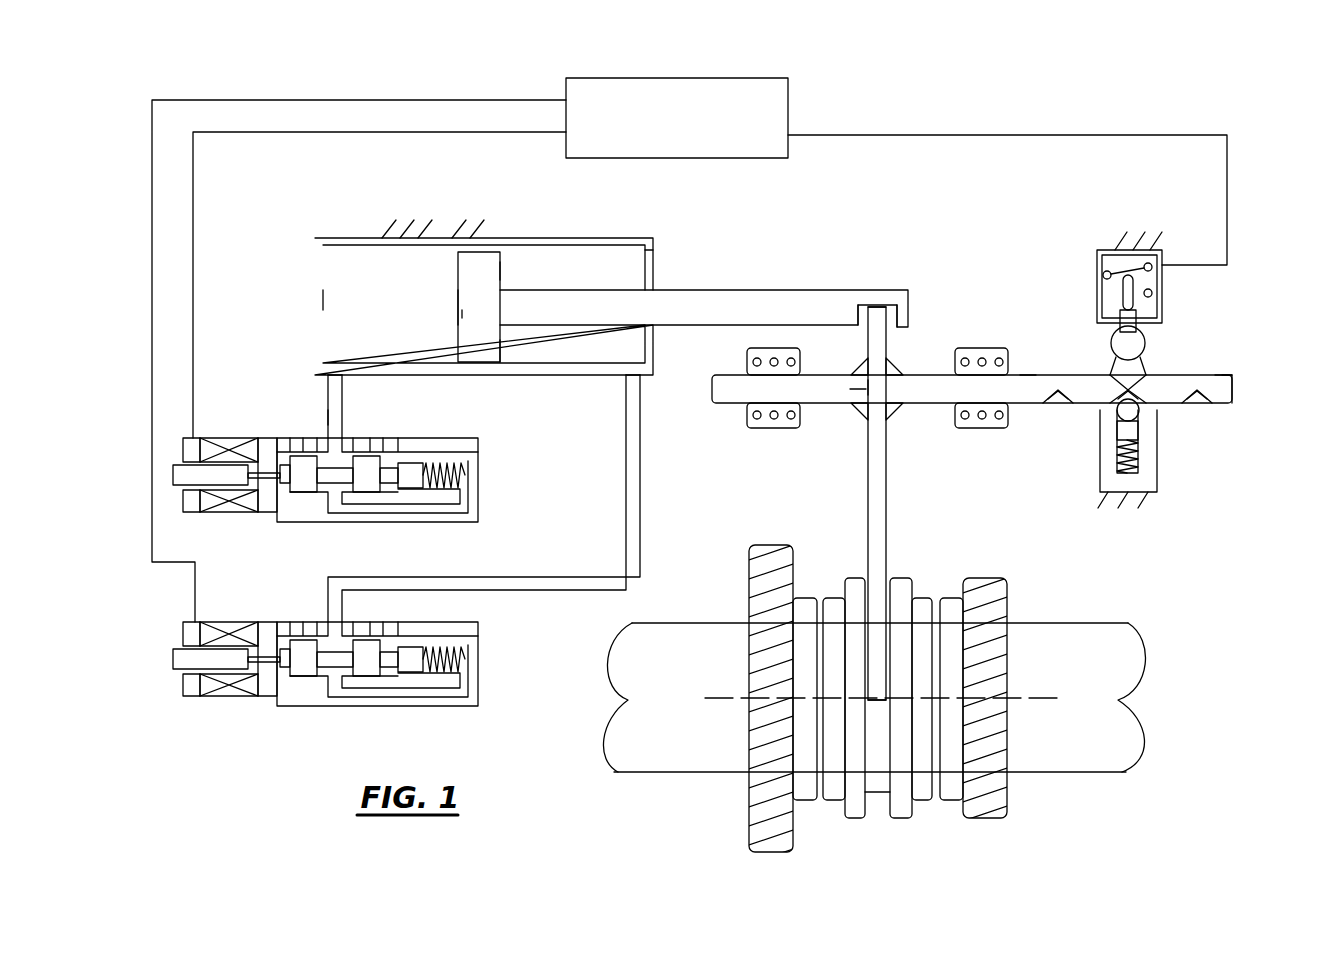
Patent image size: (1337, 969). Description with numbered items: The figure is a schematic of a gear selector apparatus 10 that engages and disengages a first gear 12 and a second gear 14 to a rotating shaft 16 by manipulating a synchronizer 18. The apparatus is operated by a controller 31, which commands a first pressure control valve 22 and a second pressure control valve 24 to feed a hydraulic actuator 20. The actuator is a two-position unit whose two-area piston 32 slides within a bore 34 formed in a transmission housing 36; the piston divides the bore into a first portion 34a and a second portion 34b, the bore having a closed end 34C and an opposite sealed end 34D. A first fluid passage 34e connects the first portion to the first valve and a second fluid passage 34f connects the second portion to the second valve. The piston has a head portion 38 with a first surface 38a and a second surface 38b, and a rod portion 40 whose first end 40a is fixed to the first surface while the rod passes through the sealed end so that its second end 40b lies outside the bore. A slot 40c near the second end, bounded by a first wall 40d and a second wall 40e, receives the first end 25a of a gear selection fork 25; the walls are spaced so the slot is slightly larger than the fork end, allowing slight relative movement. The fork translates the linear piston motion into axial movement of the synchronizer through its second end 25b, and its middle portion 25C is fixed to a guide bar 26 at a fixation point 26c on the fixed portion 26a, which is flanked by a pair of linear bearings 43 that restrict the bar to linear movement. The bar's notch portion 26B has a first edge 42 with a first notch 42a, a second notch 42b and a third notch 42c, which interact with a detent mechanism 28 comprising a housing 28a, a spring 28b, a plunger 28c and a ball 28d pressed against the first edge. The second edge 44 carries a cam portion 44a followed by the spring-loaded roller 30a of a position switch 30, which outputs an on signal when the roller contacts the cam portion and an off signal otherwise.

The gear selector apparatus 10 is at (860, 88).
The first gear 12 is at (1007, 797).
The second gear 14 is at (749, 822).
The rotating shaft 16 is at (1098, 772).
The synchronizer 18 is at (900, 818).
The hydraulic actuator 20 is at (530, 226).
The first pressure control valve 22 is at (263, 520).
The second pressure control valve 24 is at (263, 706).
The gear selection fork 25 is at (888, 535).
The first end 25a is at (878, 306).
The second end 25b is at (878, 702).
The middle portion 25C is at (868, 388).
The guide bar 26 is at (918, 405).
The fixed portion 26a is at (1028, 375).
The notch portion 26B is at (1242, 350).
The fixation point 26c is at (849, 431).
The detent mechanism 28 is at (1167, 512).
The housing 28a is at (1100, 485).
The spring 28b is at (1117, 468).
The plunger 28c is at (1138, 430).
The ball 28d is at (1115, 405).
The position switch 30 is at (1103, 250).
The spring-loaded roller 30a is at (1146, 338).
The controller 31 is at (660, 124).
The two-area piston 32 is at (505, 350).
The bore 34 is at (362, 250).
The first portion 34a is at (367, 362).
The second portion 34b is at (610, 362).
The closed end 34C is at (323, 300).
The sealed end 34D is at (645, 250).
The first fluid passage 34e is at (328, 418).
The second fluid passage 34f is at (626, 472).
The transmission housing 36 is at (442, 216).
The head portion 38 is at (483, 255).
The first surface 38a is at (458, 303).
The second surface 38b is at (500, 278).
The rod portion 40 is at (706, 290).
The first end 40a is at (480, 312).
The second end 40b is at (908, 322).
The slot 40c is at (864, 312).
The first wall 40d is at (866, 328).
The second wall 40e is at (888, 322).
The first edge 42 is at (1222, 403).
The first notch 42a is at (1060, 406).
The second notch 42b is at (1142, 380).
The third notch 42c is at (1197, 406).
The linear bearings 43 is at (757, 430).
The second edge 44 is at (1222, 375).
The cam portion 44a is at (1112, 372).